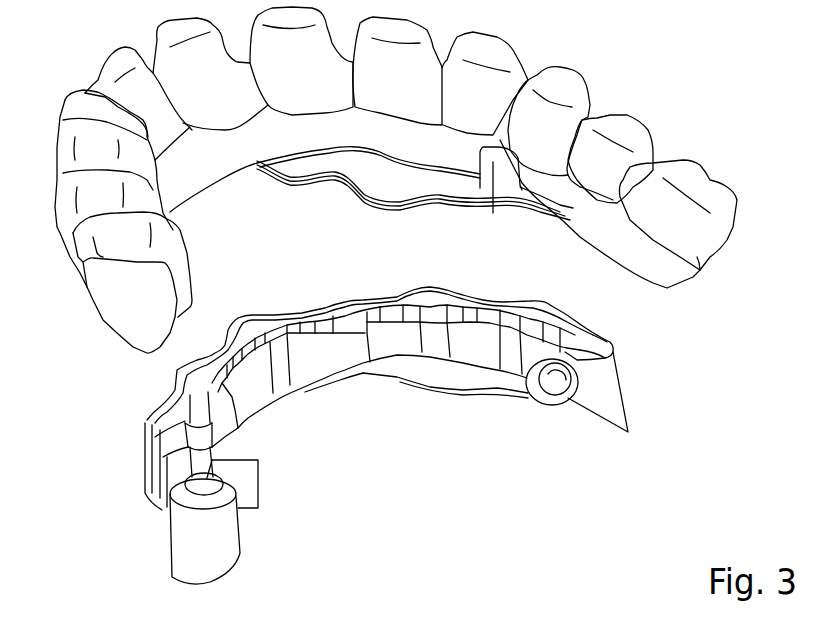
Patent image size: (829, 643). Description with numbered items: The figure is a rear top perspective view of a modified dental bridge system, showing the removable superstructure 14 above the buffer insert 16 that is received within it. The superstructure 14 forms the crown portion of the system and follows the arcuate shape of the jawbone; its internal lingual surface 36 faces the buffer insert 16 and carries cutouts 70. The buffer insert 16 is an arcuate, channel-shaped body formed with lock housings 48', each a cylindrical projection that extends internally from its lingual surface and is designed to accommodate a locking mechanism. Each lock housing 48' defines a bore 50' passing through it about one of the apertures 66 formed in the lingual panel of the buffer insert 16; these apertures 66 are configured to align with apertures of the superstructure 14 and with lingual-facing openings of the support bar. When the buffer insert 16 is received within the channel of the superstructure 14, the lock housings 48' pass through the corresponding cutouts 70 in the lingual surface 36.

The superstructure 14 is at (715, 203).
The internal lingual surface 36 is at (572, 207).
The cutouts 70 is at (493, 213).
The buffer insert 16 is at (607, 380).
The lock housings 48' is at (416, 446).
The bore 50' is at (552, 408).
The apertures 66 is at (570, 393).